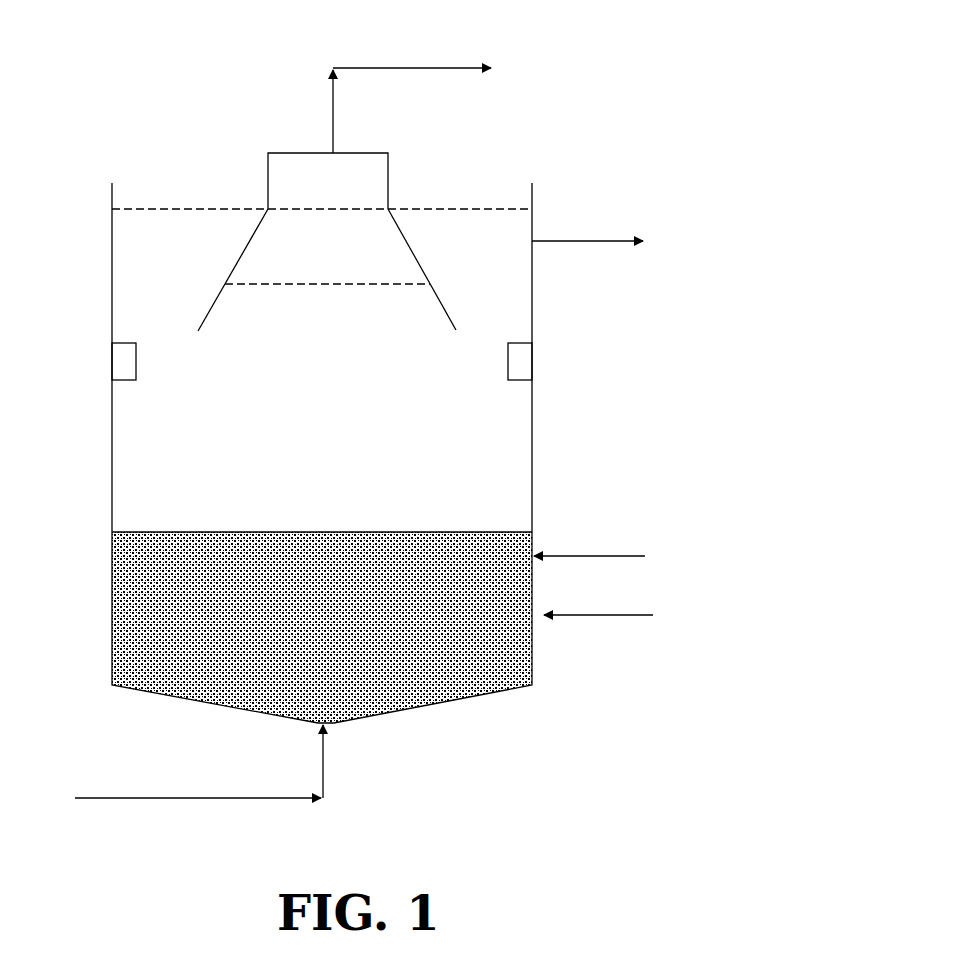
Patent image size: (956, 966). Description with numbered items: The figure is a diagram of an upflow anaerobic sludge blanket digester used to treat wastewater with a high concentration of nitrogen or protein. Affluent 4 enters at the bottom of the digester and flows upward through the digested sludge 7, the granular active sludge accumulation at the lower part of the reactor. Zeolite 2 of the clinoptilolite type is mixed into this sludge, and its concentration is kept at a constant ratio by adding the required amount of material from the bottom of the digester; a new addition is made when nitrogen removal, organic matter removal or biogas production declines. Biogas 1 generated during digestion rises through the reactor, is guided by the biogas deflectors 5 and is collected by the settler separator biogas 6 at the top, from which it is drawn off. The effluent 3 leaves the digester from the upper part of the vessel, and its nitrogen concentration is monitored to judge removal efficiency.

The biogas 1 is at (371, 177).
The zeolite 2 is at (410, 623).
The effluent 3 is at (631, 236).
The affluent 4 is at (189, 761).
The biogas deflectors 5 is at (372, 361).
The settler separator biogas 6 is at (282, 428).
The digested sludge 7 is at (623, 608).